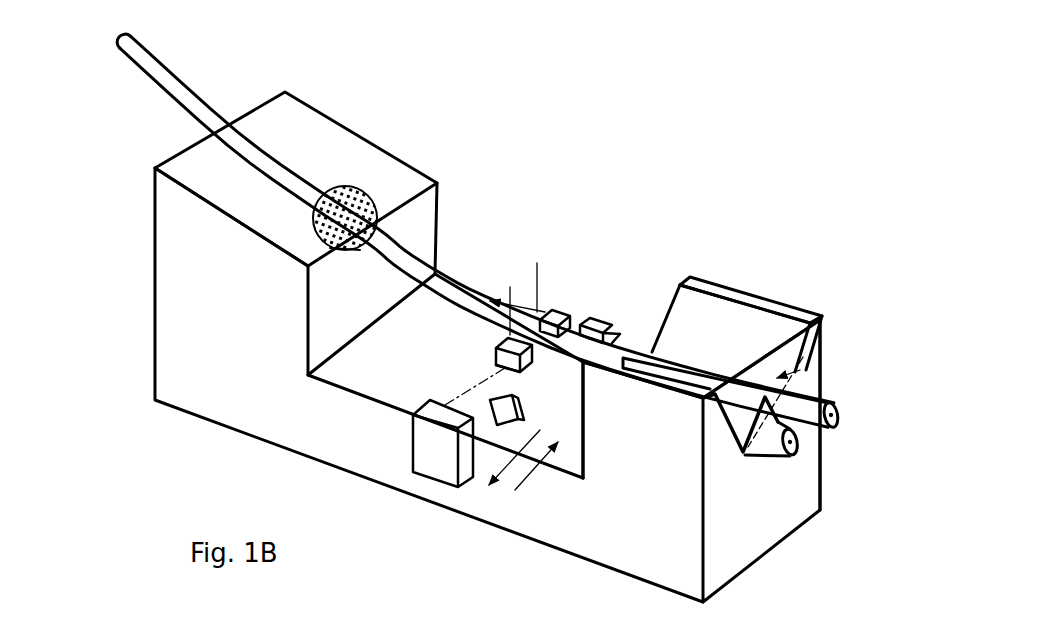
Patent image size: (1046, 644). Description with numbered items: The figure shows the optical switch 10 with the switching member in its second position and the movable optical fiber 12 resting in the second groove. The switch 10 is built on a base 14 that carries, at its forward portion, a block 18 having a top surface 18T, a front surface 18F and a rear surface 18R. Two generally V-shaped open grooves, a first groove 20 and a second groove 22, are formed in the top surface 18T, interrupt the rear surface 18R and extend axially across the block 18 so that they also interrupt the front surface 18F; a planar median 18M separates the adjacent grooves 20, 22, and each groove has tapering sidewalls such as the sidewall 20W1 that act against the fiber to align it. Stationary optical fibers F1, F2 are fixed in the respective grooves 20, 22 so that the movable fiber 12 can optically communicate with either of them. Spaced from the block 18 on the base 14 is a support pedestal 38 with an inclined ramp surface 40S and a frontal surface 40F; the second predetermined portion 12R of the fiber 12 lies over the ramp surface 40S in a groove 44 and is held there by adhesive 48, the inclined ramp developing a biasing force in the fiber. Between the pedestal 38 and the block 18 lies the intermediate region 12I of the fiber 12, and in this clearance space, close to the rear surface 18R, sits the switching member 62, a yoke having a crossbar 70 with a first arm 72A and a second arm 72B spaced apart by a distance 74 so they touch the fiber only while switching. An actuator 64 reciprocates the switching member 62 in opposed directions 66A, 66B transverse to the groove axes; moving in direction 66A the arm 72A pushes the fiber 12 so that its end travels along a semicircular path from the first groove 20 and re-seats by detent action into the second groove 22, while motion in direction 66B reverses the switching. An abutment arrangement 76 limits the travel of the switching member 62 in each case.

The switch 10 is at (586, 158).
The optical fiber 12 is at (455, 272).
The second predetermined portion of the fiber 12R is at (280, 167).
The intermediate region of the fiber 12I is at (483, 307).
The base 14 is at (352, 444).
The block 18 is at (638, 516).
The rear surface of the block 18R is at (578, 420).
The planar median 18M is at (697, 372).
The top surface of the block 18T is at (758, 300).
The front surface of the block 18F is at (810, 352).
The first groove 20 is at (823, 367).
The sidewall of the first groove 20W1 is at (780, 337).
The second groove 22 is at (722, 438).
The support pedestal 38 is at (190, 278).
The ramp surface 40S is at (385, 165).
The frontal surface of the pedestal 40F is at (443, 208).
The groove in the ramp surface 44 is at (362, 246).
The adhesive 48 is at (360, 190).
The switching member 62 is at (485, 357).
The actuator 64 is at (419, 410).
The first direction 66A is at (513, 469).
The second direction 66B is at (537, 473).
The crossbar 70 is at (532, 363).
The first arm 72A is at (556, 314).
The second arm 72B is at (505, 340).
The spacing between the arms 74 is at (545, 272).
The abutment arrangement 76 is at (598, 323).
The first stationary optical fiber F1 is at (838, 423).
The second stationary optical fiber F2 is at (800, 448).